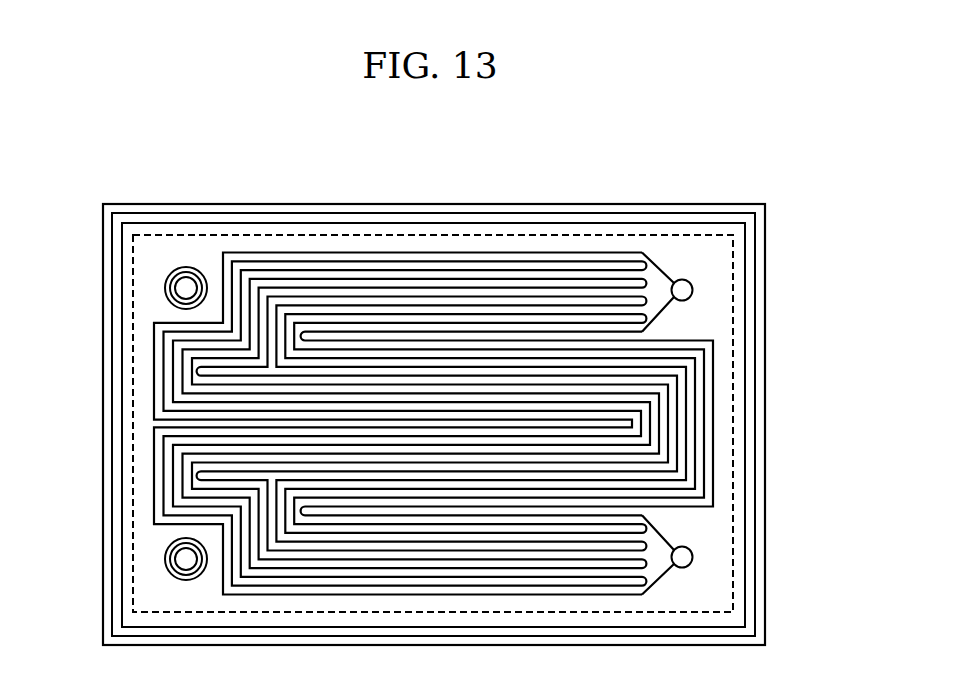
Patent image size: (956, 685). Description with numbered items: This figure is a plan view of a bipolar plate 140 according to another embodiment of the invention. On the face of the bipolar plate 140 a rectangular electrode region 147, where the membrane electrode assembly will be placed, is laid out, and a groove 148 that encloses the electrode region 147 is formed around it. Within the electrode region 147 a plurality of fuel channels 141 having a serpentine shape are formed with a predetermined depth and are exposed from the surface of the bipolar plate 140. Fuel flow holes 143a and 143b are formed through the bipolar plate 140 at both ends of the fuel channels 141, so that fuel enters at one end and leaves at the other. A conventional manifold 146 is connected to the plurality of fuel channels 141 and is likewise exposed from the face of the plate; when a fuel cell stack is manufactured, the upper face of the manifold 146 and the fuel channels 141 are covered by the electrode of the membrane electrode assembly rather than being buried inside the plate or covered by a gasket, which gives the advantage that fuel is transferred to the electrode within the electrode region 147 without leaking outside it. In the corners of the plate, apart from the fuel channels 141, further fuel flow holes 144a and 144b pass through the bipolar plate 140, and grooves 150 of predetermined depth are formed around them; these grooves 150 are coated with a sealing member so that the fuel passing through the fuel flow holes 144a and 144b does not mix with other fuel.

The bipolar plate 140 is at (731, 204).
The fuel channels 141 is at (460, 252).
The fuel flow hole 143a is at (693, 290).
The fuel flow hole 143b is at (693, 557).
The fuel flow hole 144a is at (166, 280).
The fuel flow hole 144b is at (166, 551).
The manifold 146 is at (660, 289).
The electrode region 147 is at (273, 235).
The groove 148 is at (160, 216).
The grooves 150 is at (184, 287).